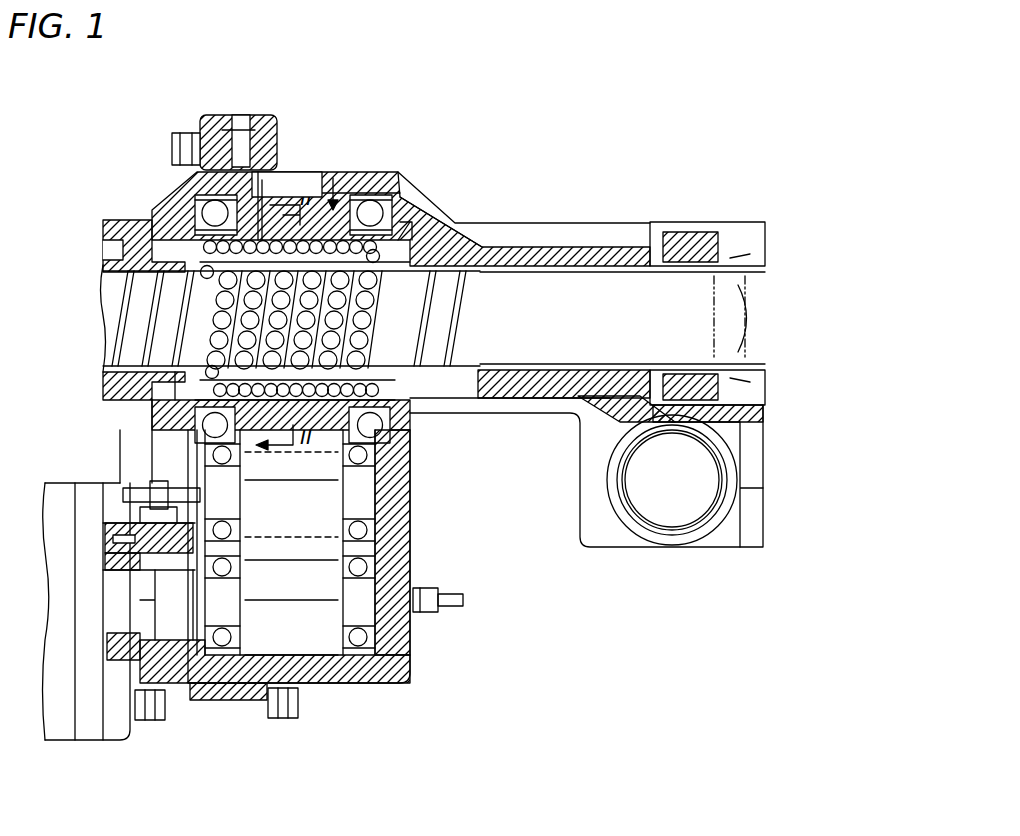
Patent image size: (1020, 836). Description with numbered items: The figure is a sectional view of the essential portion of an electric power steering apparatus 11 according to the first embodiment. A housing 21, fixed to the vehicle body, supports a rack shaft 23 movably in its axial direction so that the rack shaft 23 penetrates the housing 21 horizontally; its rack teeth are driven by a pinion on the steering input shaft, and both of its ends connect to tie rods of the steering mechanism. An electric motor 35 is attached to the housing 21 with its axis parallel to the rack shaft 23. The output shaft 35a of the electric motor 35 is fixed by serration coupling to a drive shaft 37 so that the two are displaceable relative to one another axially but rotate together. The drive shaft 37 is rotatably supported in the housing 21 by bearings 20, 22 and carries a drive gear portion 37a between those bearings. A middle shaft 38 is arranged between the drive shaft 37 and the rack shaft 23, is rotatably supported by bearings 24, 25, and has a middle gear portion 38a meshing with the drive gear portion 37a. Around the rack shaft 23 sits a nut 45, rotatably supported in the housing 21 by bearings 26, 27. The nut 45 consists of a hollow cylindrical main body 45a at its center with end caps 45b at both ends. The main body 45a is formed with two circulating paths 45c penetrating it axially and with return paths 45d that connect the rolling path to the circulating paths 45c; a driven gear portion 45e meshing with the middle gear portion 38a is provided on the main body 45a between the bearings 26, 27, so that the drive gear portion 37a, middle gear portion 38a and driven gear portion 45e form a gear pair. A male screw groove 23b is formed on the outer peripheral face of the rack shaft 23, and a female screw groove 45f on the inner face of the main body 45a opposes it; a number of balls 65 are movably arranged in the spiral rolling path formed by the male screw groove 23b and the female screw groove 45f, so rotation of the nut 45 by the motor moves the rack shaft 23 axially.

The electric power steering apparatus 11 is at (91, 152).
The bearing 20 is at (225, 648).
The housing 21 is at (215, 115).
The bearing 22 is at (360, 647).
The rack shaft 23 is at (590, 292).
The male screw groove 23b is at (137, 343).
The bearing 24 is at (177, 465).
The bearing 25 is at (375, 463).
The bearing 26 is at (213, 212).
The bearing 27 is at (373, 210).
The electric motor 35 is at (63, 715).
The output shaft 35a is at (176, 640).
The drive shaft 37 is at (358, 617).
The drive gear portion 37a is at (313, 640).
The middle shaft 38 is at (362, 503).
The middle gear portion 38a is at (298, 567).
The nut 45 is at (333, 185).
The main body 45a is at (366, 172).
The end cap 45b is at (175, 228).
The circulating path 45c is at (247, 162).
The return path 45d is at (175, 383).
The driven gear portion 45e is at (285, 200).
The female screw groove 45f is at (212, 312).
The balls 65 is at (218, 325).